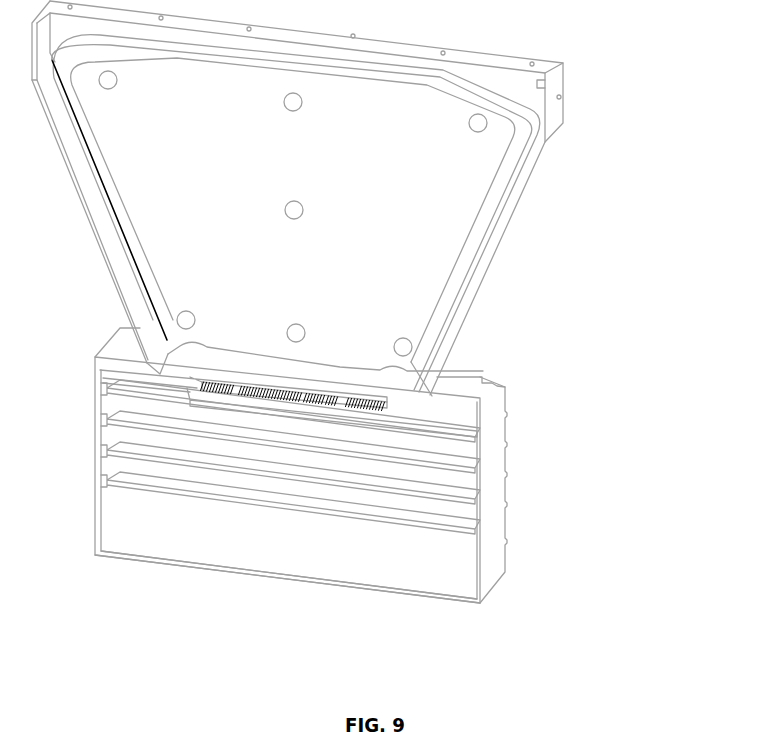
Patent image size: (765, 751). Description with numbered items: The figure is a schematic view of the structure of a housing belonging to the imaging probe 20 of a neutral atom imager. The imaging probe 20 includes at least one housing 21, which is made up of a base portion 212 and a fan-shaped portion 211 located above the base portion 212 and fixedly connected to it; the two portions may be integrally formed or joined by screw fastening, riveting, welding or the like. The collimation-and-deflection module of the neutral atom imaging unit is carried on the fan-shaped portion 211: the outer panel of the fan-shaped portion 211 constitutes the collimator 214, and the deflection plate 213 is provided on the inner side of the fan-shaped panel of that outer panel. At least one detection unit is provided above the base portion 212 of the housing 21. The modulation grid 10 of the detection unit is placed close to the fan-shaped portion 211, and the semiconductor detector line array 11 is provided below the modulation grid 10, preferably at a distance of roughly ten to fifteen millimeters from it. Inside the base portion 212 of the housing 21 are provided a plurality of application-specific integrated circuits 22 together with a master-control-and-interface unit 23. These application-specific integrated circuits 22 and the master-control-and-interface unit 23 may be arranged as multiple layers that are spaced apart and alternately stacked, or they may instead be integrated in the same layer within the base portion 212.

The imaging probe 20 is at (544, 287).
The collimator 214 is at (547, 70).
The fan-shaped portion 211 is at (542, 165).
The deflection plate 213 is at (355, 92).
The housing 21 is at (487, 477).
The base portion 212 is at (490, 558).
The application-specific integrated circuits 22 is at (412, 588).
The master-control-and-interface unit 23 is at (180, 465).
The modulation grid 10 is at (380, 402).
The support plate 11 is at (364, 423).